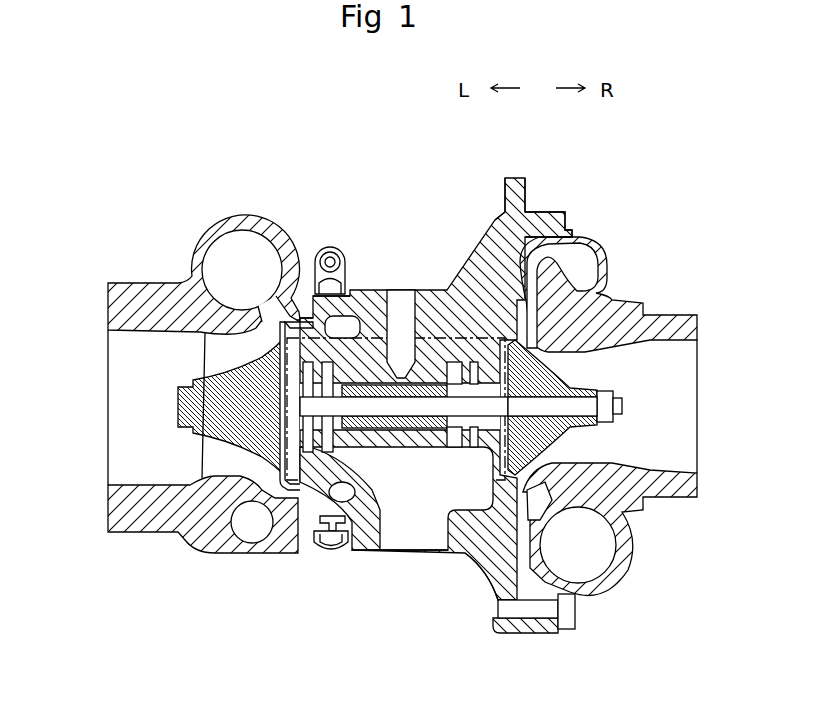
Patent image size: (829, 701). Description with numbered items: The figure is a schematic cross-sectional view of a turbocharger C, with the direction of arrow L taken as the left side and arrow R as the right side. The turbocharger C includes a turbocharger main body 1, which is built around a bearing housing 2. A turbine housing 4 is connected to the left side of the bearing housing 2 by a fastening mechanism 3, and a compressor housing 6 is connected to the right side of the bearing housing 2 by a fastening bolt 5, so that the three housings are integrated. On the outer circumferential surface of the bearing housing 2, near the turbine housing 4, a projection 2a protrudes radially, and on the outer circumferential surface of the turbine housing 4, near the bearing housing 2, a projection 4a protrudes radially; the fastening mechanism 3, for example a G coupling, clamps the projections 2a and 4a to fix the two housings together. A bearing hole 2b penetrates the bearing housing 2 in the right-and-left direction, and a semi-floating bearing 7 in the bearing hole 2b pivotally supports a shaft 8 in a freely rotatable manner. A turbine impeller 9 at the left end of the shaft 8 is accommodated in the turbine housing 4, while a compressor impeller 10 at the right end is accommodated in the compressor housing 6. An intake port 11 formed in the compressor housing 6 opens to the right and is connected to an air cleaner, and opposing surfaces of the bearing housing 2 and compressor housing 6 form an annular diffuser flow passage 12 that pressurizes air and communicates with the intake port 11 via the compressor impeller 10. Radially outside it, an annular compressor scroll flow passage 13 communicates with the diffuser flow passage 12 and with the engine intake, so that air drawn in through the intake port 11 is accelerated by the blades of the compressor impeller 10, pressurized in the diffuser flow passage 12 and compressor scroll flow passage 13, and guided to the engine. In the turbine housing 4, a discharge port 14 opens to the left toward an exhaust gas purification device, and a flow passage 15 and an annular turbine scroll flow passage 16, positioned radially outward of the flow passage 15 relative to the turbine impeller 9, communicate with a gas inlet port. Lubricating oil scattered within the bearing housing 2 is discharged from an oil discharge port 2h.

The turbocharger main body 1 is at (210, 162).
The bearing housing 2 is at (513, 177).
The projection 2a is at (337, 540).
The bearing hole 2b is at (400, 540).
The oil discharge port 2h is at (422, 552).
The fastening mechanism 3 is at (358, 247).
The turbine housing 4 is at (313, 237).
The projection 4a is at (322, 540).
The fastening bolt 5 is at (575, 612).
The compressor housing 6 is at (540, 222).
The semi-floating bearing 7 is at (421, 378).
The shaft 8 is at (381, 395).
The turbine impeller 9 is at (215, 448).
The compressor impeller 10 is at (573, 367).
The intake port 11 is at (698, 458).
The diffuser flow passage 12 is at (497, 235).
The compressor scroll flow passage 13 is at (578, 240).
The discharge port 14 is at (108, 362).
The flow passage 15 is at (262, 312).
The turbine scroll flow passage 16 is at (240, 237).
The turbocharger C is at (168, 58).